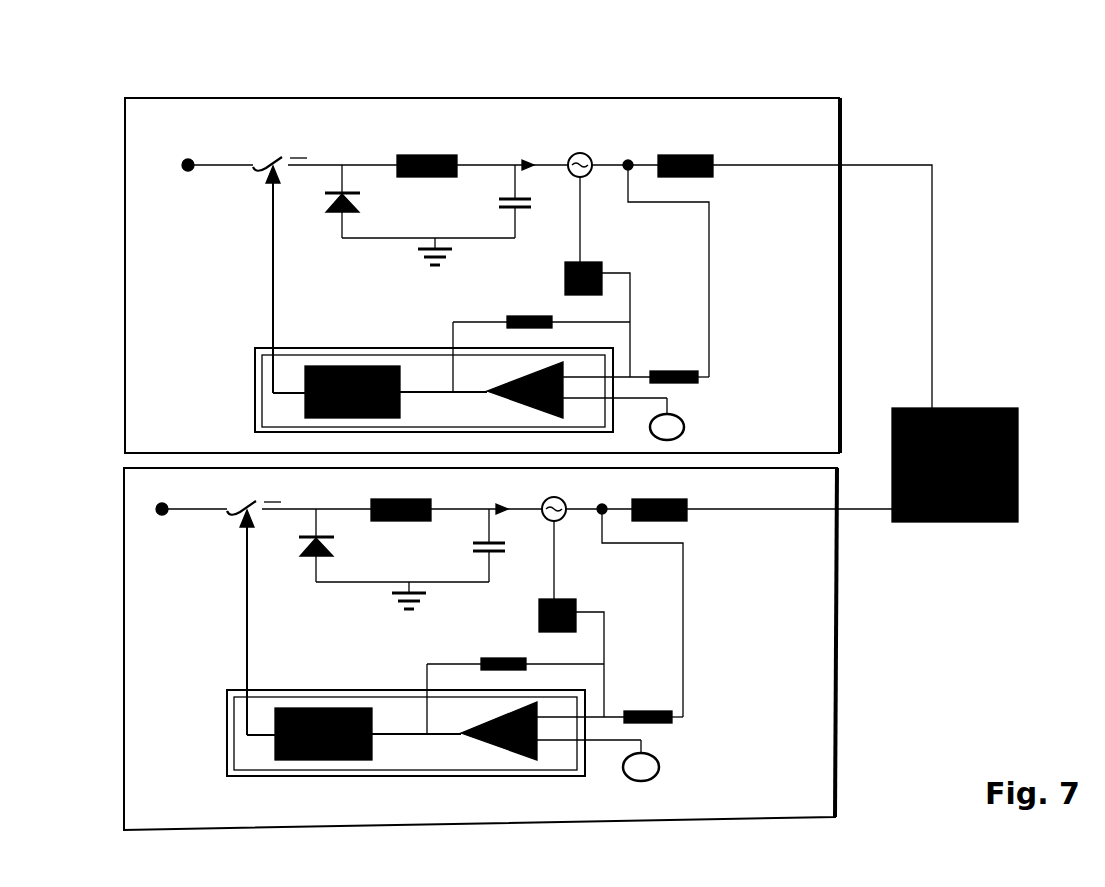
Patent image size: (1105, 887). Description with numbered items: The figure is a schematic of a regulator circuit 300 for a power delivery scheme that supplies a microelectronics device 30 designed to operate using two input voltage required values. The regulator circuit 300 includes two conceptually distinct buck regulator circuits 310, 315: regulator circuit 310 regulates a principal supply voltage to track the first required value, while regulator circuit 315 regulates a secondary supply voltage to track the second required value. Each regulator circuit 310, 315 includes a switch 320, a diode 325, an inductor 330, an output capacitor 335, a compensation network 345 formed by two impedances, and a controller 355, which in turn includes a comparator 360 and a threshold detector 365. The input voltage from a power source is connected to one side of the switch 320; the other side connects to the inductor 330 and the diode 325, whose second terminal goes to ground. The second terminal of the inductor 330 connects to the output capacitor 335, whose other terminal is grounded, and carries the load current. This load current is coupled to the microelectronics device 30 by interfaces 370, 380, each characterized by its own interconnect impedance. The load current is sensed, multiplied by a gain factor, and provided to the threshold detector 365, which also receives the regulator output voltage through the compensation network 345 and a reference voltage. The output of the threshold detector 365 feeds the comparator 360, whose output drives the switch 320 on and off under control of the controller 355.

The regulator circuit 300 is at (878, 51).
The regulator circuit 310 is at (237, 97).
The regulator circuit 315 is at (124, 596).
The switch 320 is at (253, 165).
The diode 325 is at (340, 214).
The inductor 330 is at (449, 157).
The output capacitor 335 is at (500, 205).
The compensation network 345 is at (507, 316).
The controller 355 is at (403, 497).
The comparator 360 is at (400, 378).
The threshold detector 365 is at (517, 400).
The interface 370 is at (880, 167).
The interface 380 is at (856, 513).
The microelectronics device 30 is at (948, 408).